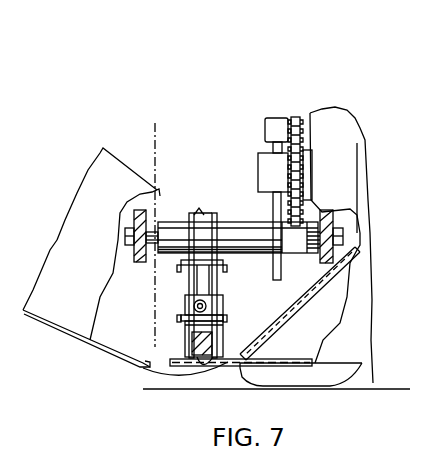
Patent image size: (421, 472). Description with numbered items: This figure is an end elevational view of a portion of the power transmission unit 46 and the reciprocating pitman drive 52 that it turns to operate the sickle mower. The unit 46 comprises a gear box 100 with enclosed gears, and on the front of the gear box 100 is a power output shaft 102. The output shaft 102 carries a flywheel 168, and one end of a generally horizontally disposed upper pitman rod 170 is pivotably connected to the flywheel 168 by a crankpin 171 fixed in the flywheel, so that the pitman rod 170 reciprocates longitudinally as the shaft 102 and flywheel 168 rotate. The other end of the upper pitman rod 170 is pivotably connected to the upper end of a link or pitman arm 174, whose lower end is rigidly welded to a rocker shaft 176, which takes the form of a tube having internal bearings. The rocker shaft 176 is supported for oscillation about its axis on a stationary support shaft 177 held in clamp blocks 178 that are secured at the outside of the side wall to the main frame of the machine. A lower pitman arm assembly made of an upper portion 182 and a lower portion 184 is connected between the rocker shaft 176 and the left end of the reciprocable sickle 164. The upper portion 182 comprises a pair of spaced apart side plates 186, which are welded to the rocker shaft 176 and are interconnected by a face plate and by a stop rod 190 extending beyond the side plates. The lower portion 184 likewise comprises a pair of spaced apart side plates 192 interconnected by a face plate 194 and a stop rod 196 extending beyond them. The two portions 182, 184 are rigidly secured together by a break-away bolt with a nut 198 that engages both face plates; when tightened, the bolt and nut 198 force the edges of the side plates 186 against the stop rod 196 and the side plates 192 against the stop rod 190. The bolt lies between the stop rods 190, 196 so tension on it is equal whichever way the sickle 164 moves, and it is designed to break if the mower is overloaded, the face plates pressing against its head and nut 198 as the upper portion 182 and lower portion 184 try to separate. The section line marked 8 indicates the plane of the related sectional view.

The section line 8- 8 is at (149, 133).
The power transmission unit 46 is at (342, 152).
The reciprocating pitman drive 52 is at (230, 208).
The gear box 100 is at (352, 158).
The power output shaft 102 is at (307, 173).
The reciprocable sickle 164 is at (197, 357).
The flywheel 168 is at (300, 117).
The upper pitman rod 170 is at (272, 147).
The crankpin 171 is at (287, 130).
The pitman arm 174 is at (277, 212).
The rocker shaft 176 is at (247, 255).
The stationary support shaft 177 is at (343, 236).
The clamp blocks 178 is at (140, 262).
The upper portion 182 is at (191, 213).
The lower portion 184 is at (228, 328).
The side plates 186 is at (210, 204).
The stop rod 190 is at (184, 272).
The side plates 192 is at (220, 344).
The face plate 194 is at (220, 299).
The stop rod 196 is at (227, 313).
The nut 198 is at (188, 308).